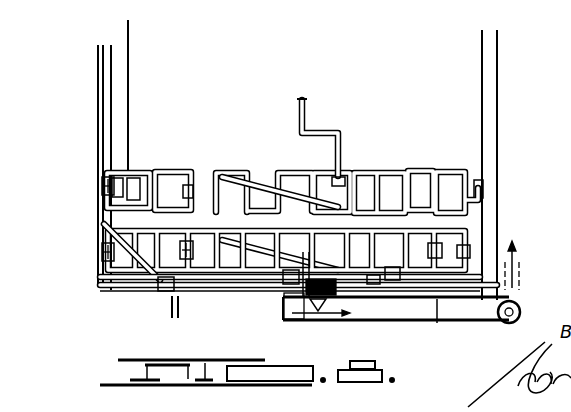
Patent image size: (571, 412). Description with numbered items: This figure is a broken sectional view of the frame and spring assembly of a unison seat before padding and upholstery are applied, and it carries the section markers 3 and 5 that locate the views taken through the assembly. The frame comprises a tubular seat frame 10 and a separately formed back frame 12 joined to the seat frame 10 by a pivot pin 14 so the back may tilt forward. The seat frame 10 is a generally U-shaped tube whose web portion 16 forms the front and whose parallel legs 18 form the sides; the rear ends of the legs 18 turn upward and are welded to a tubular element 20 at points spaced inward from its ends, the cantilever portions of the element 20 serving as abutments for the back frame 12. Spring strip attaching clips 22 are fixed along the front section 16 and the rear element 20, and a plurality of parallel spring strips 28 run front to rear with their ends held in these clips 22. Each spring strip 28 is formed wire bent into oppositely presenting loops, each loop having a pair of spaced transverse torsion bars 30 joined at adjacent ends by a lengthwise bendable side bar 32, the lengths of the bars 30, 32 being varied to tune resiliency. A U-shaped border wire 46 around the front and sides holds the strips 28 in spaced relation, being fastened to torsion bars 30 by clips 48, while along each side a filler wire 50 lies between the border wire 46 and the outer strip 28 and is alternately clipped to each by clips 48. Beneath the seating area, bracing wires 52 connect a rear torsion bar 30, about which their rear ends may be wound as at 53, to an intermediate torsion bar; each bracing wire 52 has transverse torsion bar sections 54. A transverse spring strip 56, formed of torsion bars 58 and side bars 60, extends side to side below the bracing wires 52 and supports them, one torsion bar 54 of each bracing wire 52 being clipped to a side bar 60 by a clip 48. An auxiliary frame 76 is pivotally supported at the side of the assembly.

The seat frame 10 is at (128, 292).
The back frame 12 is at (522, 313).
The pivot pin 14 is at (286, 322).
The web portion 16 is at (125, 163).
The parallel legs 18 is at (204, 300).
The tubular element 20 is at (497, 186).
The spring strip attaching clips 22 is at (150, 184).
The spring strips 28 is at (226, 168).
The torsion bars 30 is at (275, 185).
The side bar 32 is at (270, 168).
The border wire 46 is at (108, 283).
The clips 48 is at (105, 184).
The filler wire 50 is at (258, 292).
The bracing wires 52 is at (400, 166).
The winding 53 is at (420, 178).
The torsion bar section 54 is at (372, 166).
The transverse wire spring strip 56 is at (297, 98).
The torsion bars 58 is at (312, 130).
The side bars 60 is at (298, 104).
The auxiliary frame 76 is at (435, 322).
The section line 3- 3 is at (157, 226).
The section line 5- 5 is at (345, 266).